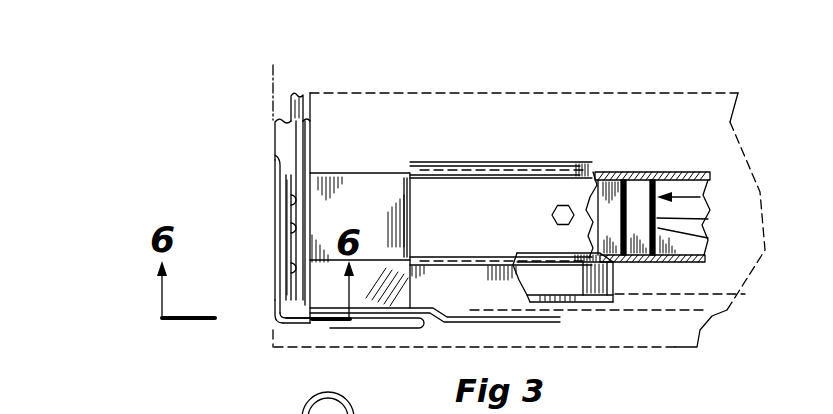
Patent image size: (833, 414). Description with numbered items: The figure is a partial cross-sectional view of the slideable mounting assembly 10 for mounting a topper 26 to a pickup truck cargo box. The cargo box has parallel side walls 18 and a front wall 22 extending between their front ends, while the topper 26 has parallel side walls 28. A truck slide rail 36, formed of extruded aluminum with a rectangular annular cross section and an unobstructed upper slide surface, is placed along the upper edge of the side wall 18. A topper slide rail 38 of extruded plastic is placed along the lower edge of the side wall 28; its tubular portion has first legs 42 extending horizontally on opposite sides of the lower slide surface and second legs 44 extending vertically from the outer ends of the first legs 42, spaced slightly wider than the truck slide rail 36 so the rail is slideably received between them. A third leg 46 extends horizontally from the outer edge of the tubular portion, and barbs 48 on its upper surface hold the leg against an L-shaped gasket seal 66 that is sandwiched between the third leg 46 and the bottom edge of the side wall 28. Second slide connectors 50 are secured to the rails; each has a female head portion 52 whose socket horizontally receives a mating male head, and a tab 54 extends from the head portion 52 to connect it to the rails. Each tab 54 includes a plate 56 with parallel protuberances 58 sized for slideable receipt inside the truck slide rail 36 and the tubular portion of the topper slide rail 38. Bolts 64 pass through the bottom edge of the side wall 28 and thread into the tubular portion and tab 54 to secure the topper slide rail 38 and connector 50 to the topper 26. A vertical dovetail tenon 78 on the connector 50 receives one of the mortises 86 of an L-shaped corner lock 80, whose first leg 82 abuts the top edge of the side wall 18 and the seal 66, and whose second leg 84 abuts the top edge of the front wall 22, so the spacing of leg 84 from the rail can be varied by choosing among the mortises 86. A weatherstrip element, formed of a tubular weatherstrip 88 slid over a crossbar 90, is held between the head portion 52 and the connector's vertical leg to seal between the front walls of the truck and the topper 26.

The slideable mounting assembly 10 is at (649, 148).
The side walls 18 is at (676, 340).
The front wall 22 is at (273, 112).
The topper 26 is at (742, 121).
The side walls 28 is at (723, 307).
The truck slide rails 36 is at (688, 173).
The topper slide rails 38 is at (496, 160).
The first legs 42 is at (538, 170).
The second legs 44 is at (577, 172).
The third leg 46 is at (585, 288).
The barbs 48 is at (607, 283).
The second slide connectors 50 is at (380, 170).
The female head portion 52 is at (392, 180).
The tab 54 is at (700, 197).
The plate 56 is at (708, 219).
The protuberances 58 is at (708, 238).
The bolts 64 is at (552, 215).
The gasket seal 66 is at (458, 318).
The tenon 78 is at (283, 215).
The corner locks 80 is at (258, 295).
The first leg 82 is at (308, 325).
The second leg 84 is at (270, 318).
The mortises 86 is at (275, 157).
The weatherstrip 88 is at (275, 126).
The crossbar 90 is at (302, 93).